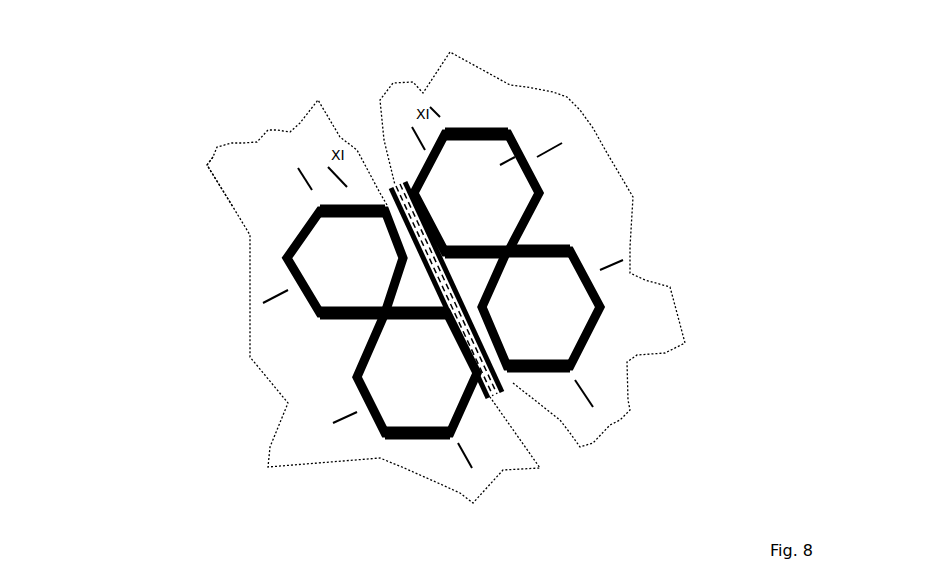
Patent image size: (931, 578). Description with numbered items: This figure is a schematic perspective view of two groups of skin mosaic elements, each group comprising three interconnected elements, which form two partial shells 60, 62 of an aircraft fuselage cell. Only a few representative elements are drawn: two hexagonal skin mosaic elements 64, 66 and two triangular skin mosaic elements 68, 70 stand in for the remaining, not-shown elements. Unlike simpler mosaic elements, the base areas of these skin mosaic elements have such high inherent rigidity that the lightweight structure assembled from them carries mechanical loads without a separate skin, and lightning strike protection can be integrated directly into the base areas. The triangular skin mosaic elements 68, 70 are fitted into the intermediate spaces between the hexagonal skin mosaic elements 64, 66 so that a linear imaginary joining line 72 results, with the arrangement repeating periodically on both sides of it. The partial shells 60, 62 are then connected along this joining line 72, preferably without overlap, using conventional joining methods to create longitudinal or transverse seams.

The partial shell 60 is at (232, 176).
The partial shell 62 is at (606, 155).
The hexagonal skin mosaic element 64 is at (323, 250).
The hexagonal skin mosaic element 66 is at (523, 148).
The triangular skin mosaic element 68 is at (360, 410).
The triangular skin mosaic element 70 is at (478, 263).
The joining line 72 is at (395, 192).